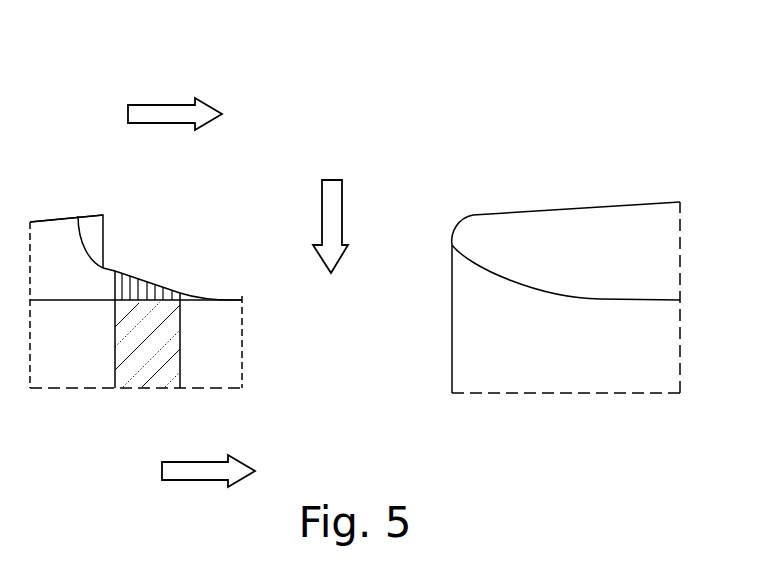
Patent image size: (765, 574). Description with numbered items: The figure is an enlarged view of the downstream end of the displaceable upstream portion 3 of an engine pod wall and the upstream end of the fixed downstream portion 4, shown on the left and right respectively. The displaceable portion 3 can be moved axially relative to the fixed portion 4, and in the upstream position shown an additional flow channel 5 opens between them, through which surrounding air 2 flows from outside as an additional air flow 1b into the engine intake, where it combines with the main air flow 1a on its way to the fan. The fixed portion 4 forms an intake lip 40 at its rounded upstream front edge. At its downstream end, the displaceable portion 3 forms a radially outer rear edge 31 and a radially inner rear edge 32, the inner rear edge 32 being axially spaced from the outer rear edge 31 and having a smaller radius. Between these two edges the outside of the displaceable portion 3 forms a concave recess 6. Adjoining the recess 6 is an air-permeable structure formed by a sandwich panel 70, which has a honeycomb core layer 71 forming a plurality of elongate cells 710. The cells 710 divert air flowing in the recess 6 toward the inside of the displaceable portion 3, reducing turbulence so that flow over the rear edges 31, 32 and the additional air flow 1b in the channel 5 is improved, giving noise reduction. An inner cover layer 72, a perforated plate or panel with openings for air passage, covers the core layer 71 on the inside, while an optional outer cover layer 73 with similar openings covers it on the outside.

The engine intake / surrounding air 2 is at (153, 113).
The main air flow 1a is at (170, 470).
The additional air flow 1b is at (328, 195).
The additional flow channel 5 is at (340, 335).
The displaceable upstream portion 3 is at (38, 230).
The fixed downstream portion 4 is at (647, 223).
The radially outer rear edge 31 is at (103, 217).
The radially inner rear edge 32 is at (243, 298).
The recess 6 is at (108, 267).
The intake lip 40 is at (472, 235).
The sandwich panel 70 is at (131, 257).
The core layer 71 is at (145, 276).
The inner cover layer 72 is at (149, 303).
The outer cover layer 73 is at (160, 284).
The elongate cells 710 is at (161, 292).